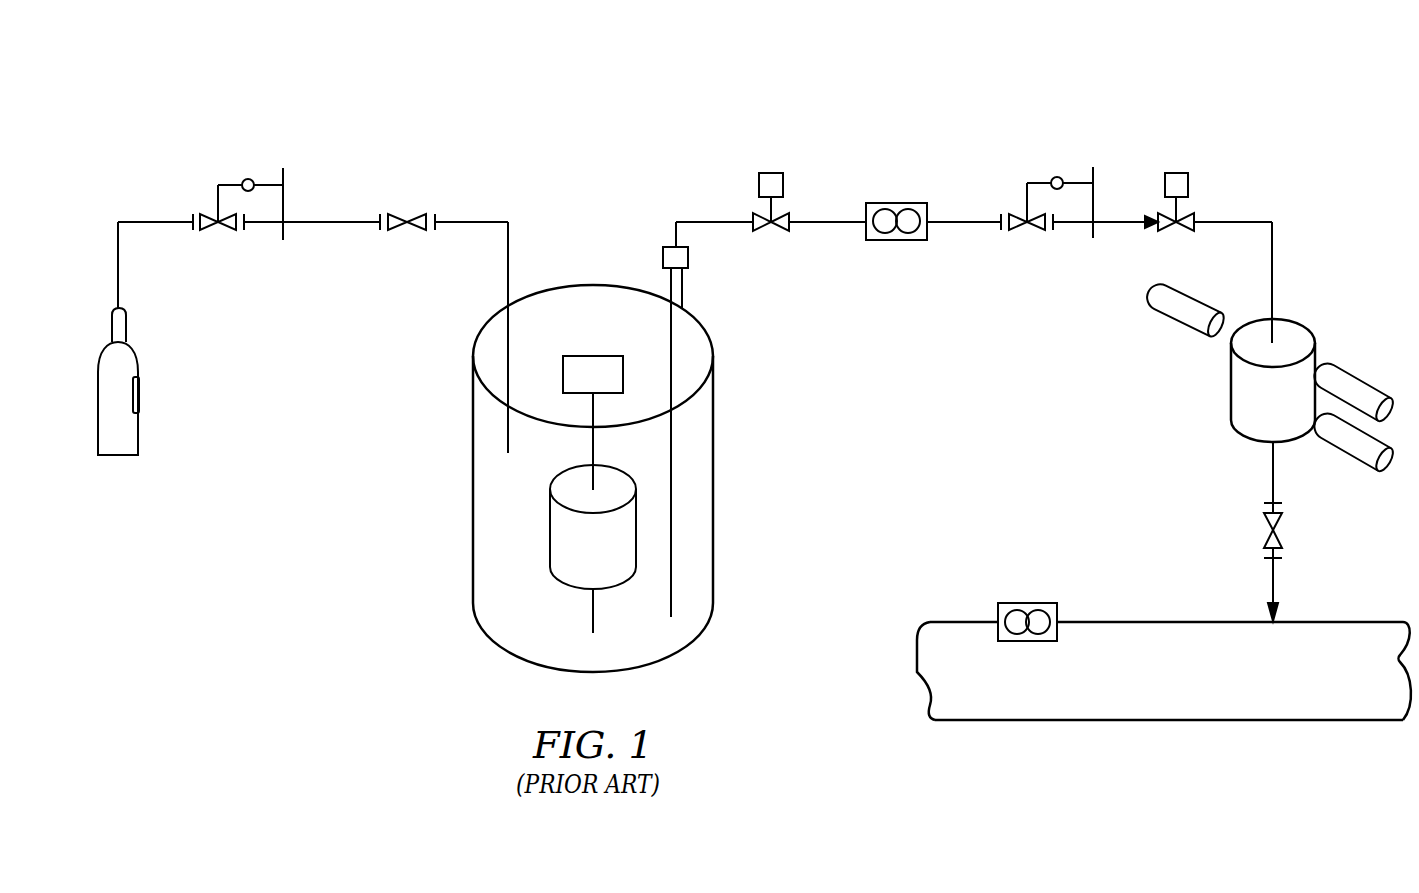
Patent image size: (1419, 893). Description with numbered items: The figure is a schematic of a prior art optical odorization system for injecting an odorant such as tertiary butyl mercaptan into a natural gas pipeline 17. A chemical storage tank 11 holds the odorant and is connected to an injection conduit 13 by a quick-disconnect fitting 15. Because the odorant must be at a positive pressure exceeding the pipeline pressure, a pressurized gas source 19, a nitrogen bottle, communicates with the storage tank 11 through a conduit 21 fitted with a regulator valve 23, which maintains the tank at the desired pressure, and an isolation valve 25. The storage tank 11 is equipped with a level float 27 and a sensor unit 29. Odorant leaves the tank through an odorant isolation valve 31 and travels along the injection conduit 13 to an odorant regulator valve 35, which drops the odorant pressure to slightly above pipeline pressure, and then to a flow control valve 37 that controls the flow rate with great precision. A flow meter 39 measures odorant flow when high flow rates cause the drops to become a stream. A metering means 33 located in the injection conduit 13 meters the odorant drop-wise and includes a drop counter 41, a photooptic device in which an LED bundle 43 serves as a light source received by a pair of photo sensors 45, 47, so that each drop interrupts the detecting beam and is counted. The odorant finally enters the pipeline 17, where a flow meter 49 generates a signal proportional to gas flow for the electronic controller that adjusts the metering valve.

The chemical storage tank 11 is at (472, 505).
The injection conduit 13 is at (838, 218).
The quick-disconnect fitting 15 is at (663, 259).
The natural gas pipeline 17 is at (1220, 722).
The pressurized gas source 19 is at (140, 398).
The conduit 21 is at (332, 220).
The regulator valve 23 is at (225, 183).
The isolation valve 25 is at (414, 213).
The level float 27 is at (575, 561).
The sensor unit 29 is at (583, 356).
The odorant isolation valve 31 is at (753, 216).
The metering means 33 is at (1270, 395).
The odorant regulator valve 35 is at (1019, 214).
The flow control valve 37 is at (1195, 216).
The flow meter 39 is at (901, 203).
The drop counter 41 is at (1216, 450).
The LED bundle 43 is at (1183, 318).
The photo sensor 45 is at (1365, 388).
The photo sensor 47 is at (1357, 465).
The flow meter 49 is at (1020, 603).